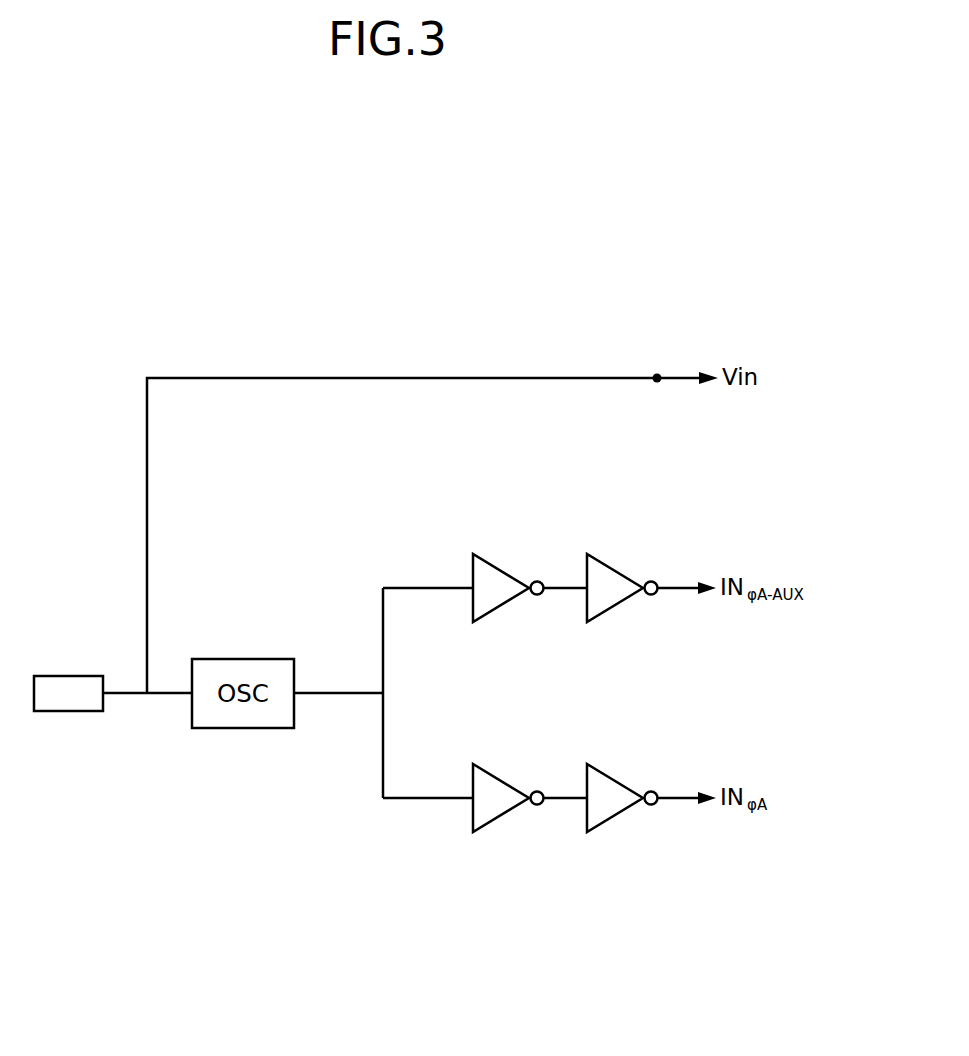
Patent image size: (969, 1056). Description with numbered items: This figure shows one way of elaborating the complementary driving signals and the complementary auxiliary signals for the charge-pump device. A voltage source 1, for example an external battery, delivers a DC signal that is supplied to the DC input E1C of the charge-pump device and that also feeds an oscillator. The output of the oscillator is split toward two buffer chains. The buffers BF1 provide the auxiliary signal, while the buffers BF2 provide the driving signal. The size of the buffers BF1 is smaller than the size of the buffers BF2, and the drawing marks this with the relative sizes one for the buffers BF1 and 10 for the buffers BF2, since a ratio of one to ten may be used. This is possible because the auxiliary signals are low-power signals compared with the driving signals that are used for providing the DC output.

The voltage source 1 is at (375, 632).
The inverter with size ratio 10 is at (594, 785).
The DC input E1C is at (657, 373).
The buffers BF1 is at (658, 528).
The buffers BF2 is at (658, 858).